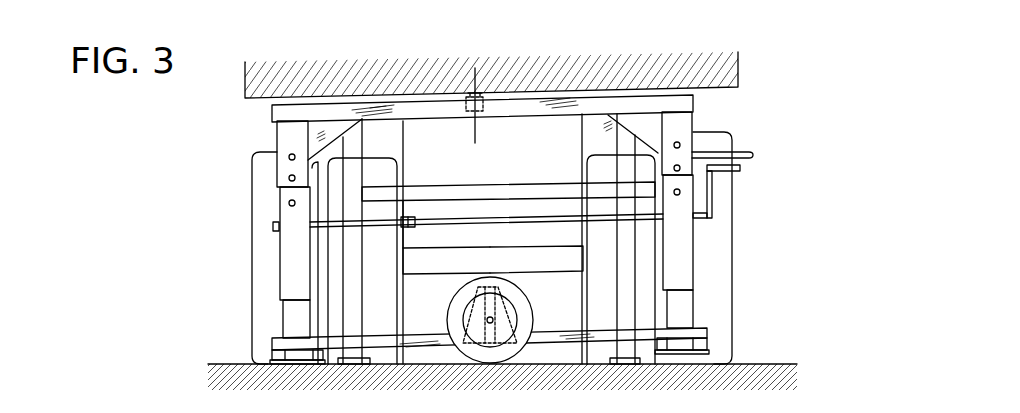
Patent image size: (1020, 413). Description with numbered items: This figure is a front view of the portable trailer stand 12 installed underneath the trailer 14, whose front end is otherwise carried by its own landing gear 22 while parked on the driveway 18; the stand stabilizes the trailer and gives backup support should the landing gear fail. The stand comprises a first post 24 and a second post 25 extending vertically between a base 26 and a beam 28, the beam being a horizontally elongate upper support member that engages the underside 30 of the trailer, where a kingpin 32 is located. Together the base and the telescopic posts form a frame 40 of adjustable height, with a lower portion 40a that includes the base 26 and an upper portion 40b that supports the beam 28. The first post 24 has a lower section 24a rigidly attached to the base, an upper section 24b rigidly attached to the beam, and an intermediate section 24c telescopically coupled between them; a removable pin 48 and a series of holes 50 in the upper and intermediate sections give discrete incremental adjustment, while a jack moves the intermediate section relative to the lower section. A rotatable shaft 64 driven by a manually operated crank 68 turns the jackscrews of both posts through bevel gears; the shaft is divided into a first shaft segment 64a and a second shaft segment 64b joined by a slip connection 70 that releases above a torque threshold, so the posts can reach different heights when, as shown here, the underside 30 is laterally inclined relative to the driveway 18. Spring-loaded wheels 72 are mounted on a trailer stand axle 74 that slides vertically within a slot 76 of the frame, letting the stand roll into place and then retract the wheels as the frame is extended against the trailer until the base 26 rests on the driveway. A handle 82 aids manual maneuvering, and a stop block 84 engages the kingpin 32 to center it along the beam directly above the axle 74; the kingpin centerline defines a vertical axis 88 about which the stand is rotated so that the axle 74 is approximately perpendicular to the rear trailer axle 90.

The portable trailer stand 12 is at (146, 170).
The trailer 14 is at (718, 97).
The driveway 18 is at (750, 364).
The landing gear 22 is at (365, 241).
The first post 24 is at (280, 294).
The lower section 24a is at (283, 325).
The upper section 24b is at (267, 147).
The intermediate section 24c is at (280, 265).
The second post 25 is at (695, 242).
The base 26 is at (272, 355).
The beam 28 is at (542, 117).
The underside 30 is at (418, 102).
The kingpin 32 is at (486, 112).
The frame 40 is at (252, 125).
The lower portion 40a is at (641, 283).
The upper portion 40b is at (639, 185).
The removable pin 48 is at (289, 179).
The holes 50 is at (289, 204).
The rotatable shaft 64 is at (508, 215).
The first shaft segment 64a is at (551, 235).
The second shaft segment 64b is at (378, 232).
The crank 68 is at (726, 176).
The slip connection 70 is at (410, 219).
The wheels 72 is at (524, 350).
The trailer stand axle 74 is at (489, 345).
The slot 76 is at (485, 313).
The handle 82 is at (730, 151).
The stop block 84 is at (509, 110).
The vertical axis 88 is at (476, 122).
The rear trailer axle 90 is at (471, 245).